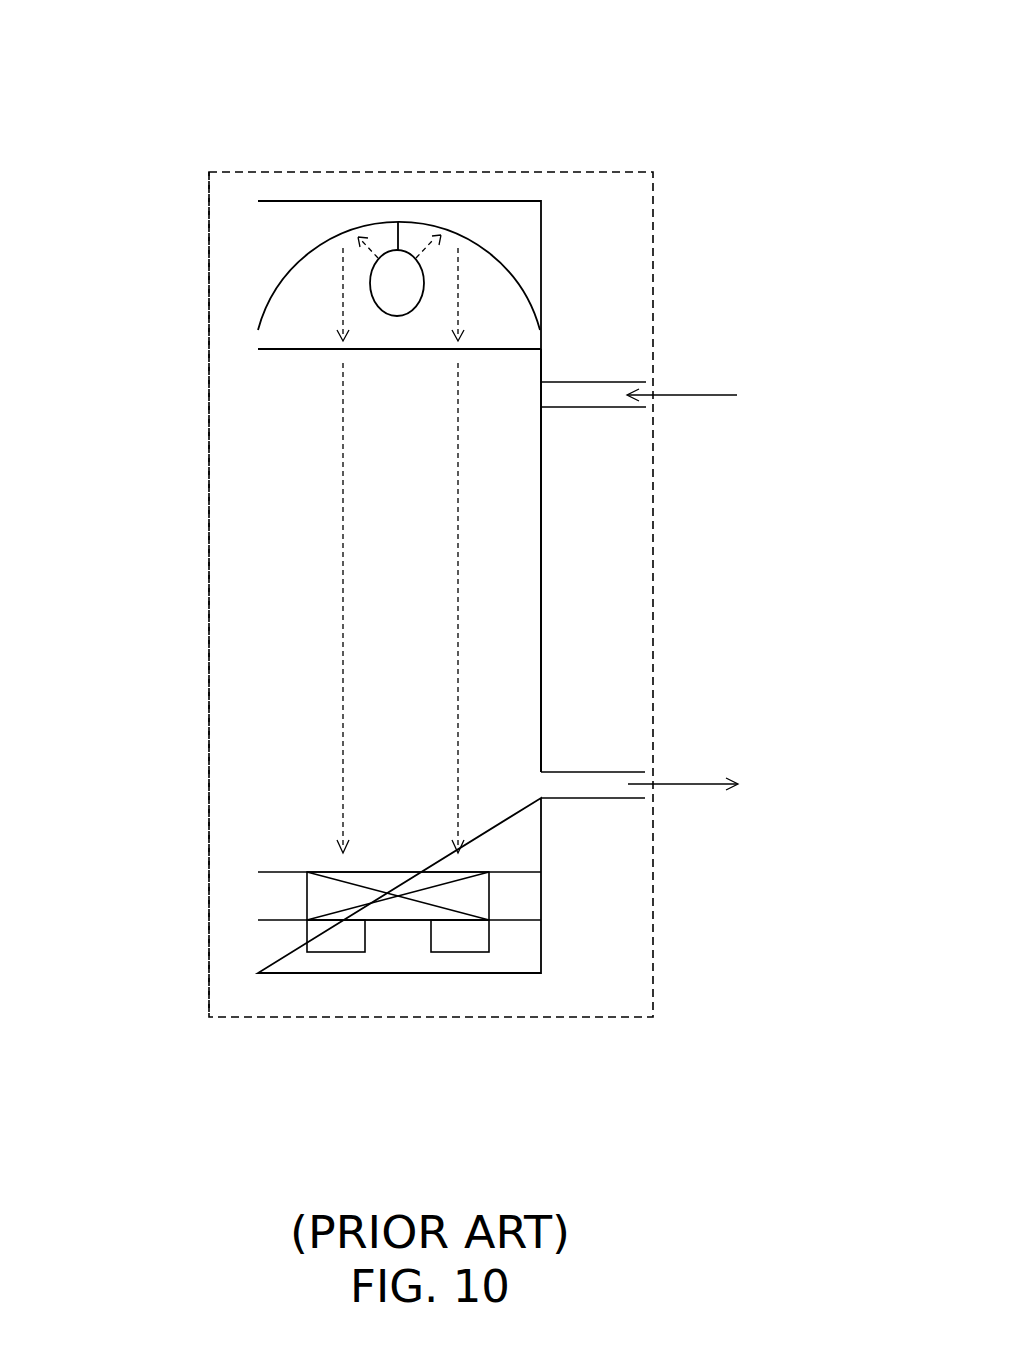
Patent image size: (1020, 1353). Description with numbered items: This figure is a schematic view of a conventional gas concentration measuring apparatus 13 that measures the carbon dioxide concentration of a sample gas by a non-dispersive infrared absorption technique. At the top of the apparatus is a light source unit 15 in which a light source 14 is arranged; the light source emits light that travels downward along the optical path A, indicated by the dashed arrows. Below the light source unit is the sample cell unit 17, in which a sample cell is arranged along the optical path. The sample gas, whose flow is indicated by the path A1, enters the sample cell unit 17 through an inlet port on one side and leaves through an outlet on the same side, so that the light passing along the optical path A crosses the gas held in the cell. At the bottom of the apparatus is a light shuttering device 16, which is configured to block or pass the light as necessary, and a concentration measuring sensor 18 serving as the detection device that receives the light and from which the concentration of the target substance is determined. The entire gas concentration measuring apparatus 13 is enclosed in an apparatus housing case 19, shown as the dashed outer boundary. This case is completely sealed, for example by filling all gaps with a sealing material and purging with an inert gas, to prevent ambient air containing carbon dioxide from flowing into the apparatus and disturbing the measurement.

The gas concentration measuring apparatus 13 is at (653, 132).
The light source 14 is at (404, 277).
The light source unit 15 is at (283, 201).
The light shuttering device 16 is at (386, 921).
The sample cell unit 17 is at (541, 608).
The concentration measuring sensor 18 is at (327, 953).
The apparatus housing case 19 is at (205, 687).
The optical path A is at (338, 572).
The path of the sample gas A1 is at (713, 395).